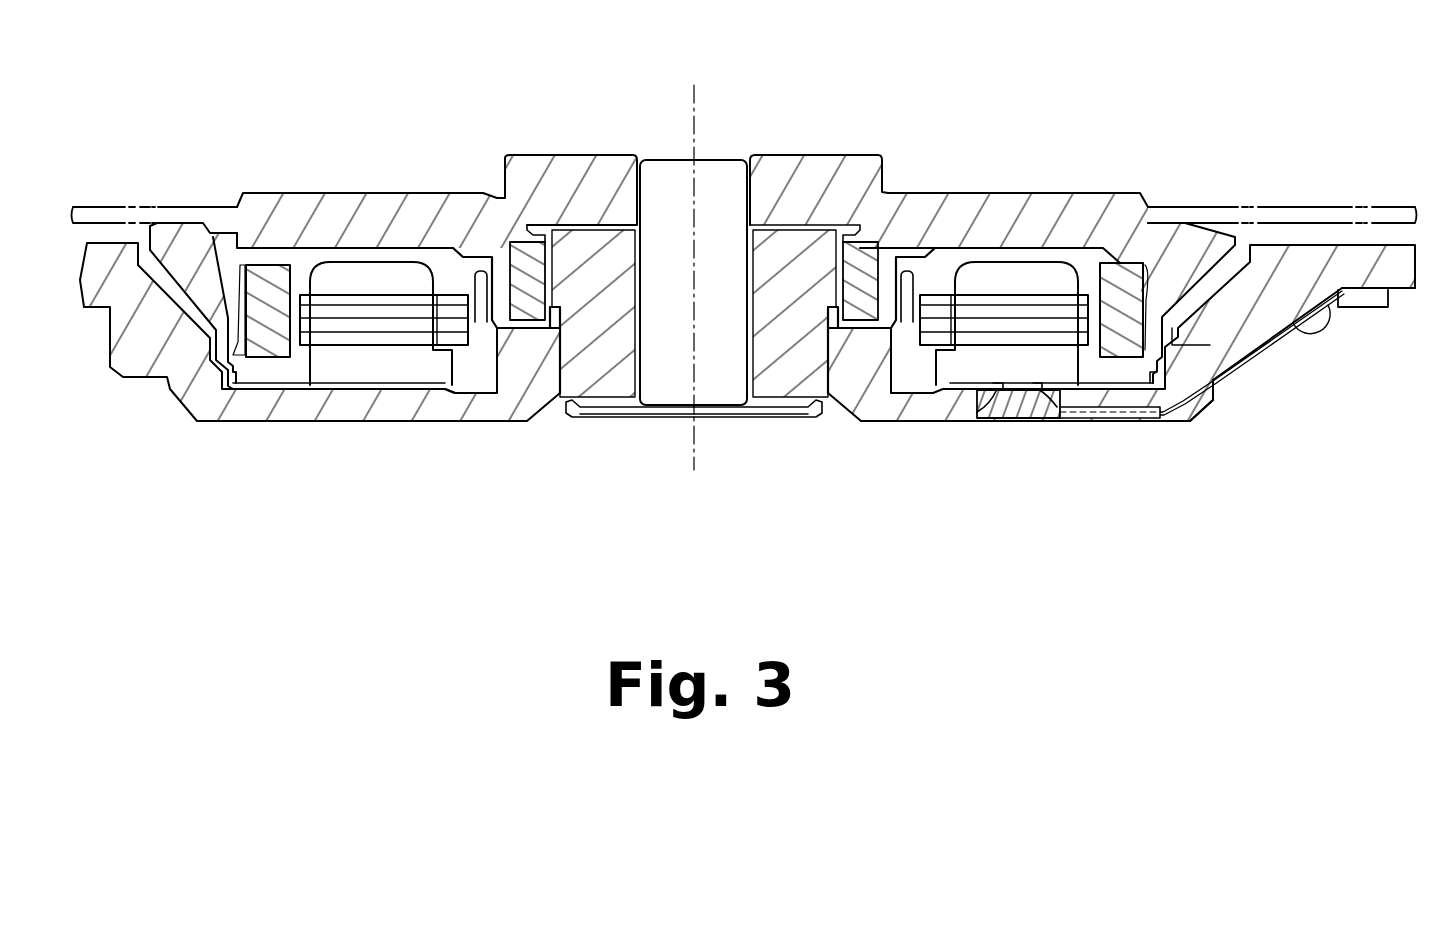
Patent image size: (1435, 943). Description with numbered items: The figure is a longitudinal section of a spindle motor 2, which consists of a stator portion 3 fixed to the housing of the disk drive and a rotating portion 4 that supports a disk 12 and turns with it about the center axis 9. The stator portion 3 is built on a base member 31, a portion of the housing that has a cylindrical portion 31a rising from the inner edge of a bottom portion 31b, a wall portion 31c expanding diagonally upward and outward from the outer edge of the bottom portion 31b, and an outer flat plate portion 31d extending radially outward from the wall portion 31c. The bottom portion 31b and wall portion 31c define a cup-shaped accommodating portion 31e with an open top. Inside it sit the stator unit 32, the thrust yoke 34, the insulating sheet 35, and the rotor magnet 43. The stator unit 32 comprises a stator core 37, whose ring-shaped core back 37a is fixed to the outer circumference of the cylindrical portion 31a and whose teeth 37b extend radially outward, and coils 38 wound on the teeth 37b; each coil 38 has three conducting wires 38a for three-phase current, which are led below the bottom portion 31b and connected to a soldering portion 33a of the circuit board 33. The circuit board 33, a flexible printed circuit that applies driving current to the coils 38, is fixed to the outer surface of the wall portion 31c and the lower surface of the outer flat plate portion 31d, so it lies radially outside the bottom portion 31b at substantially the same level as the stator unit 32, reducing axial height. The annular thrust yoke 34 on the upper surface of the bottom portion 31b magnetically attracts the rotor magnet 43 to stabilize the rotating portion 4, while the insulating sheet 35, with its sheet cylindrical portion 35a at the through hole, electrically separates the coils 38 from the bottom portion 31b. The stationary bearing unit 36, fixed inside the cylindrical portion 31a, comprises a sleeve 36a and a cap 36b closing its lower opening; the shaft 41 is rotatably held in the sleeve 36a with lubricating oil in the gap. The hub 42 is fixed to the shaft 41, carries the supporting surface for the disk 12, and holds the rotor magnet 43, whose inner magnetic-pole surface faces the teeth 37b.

The spindle motor 2 is at (281, 118).
The stator portion 3 is at (362, 508).
The rotating portion 4 is at (258, 173).
The center axis 9 is at (691, 99).
The disk 12 is at (1313, 213).
The base member 31 is at (478, 434).
The cylindrical portion 31a is at (884, 401).
The bottom portion 31b is at (1140, 401).
The wall portion 31c is at (1208, 399).
The outer flat plate portion 31d is at (1395, 291).
The accommodating portion 31e is at (1225, 483).
The stator unit 32 is at (1083, 84).
The circuit board 33 is at (1298, 331).
The soldering portion 33a is at (1310, 336).
The thrust yoke 34 is at (1098, 421).
The insulating sheet 35 is at (1063, 426).
The sheet cylindrical portion 35a is at (1003, 426).
The stationary bearing unit 36 is at (685, 483).
The sleeve 36a is at (606, 411).
The cap 36b is at (661, 411).
The stator core 37 is at (1033, 128).
The core back 37a is at (937, 300).
The teeth 37b is at (1017, 306).
The coils 38 is at (1052, 276).
The conducting wires 38a is at (1207, 336).
The shaft 41 is at (724, 178).
The hub 42 is at (381, 201).
The rotor magnet 43 is at (272, 341).